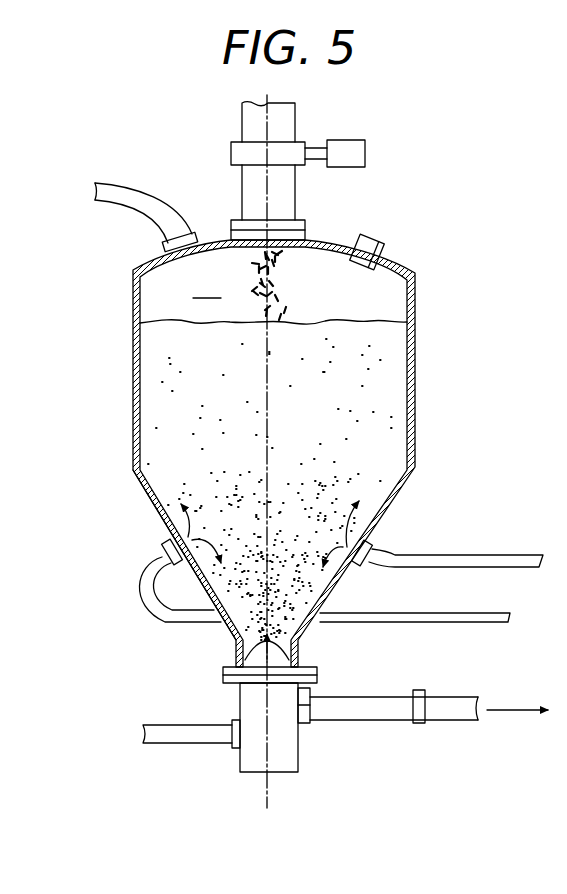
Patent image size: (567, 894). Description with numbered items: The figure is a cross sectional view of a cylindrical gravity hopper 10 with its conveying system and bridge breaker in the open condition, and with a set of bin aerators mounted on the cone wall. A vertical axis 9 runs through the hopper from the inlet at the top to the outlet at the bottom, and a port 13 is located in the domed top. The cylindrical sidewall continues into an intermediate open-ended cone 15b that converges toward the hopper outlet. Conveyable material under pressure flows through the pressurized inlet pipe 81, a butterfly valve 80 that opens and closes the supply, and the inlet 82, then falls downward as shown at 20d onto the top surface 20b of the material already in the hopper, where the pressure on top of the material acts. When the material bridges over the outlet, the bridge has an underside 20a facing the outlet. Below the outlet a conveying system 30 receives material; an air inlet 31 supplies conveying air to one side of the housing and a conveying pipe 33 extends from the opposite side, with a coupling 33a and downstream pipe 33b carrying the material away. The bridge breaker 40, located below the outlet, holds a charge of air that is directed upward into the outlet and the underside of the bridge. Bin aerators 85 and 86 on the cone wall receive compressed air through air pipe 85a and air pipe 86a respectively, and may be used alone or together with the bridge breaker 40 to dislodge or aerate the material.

The gravity hopper 10 is at (441, 244).
The vertical axis 9 is at (270, 397).
The port 13 is at (150, 213).
The cone 15b is at (146, 500).
The underside 20a is at (243, 650).
The top surface 20b is at (185, 316).
The downward flow of conveyable material 20d is at (283, 297).
The conveying system 30 is at (222, 700).
The air inlet 31 is at (178, 737).
The conveying pipe 33 is at (363, 710).
The pipe coupling 33a is at (418, 725).
The downstream pipe 33b is at (443, 712).
The bridge breaker 40 is at (263, 755).
The butterfly valve 80 is at (297, 155).
The pressurized inlet pipe 81 is at (297, 107).
The inlet 82 is at (252, 188).
The bin aerator 85 is at (375, 545).
The air pipe 85a is at (421, 555).
The bin aerator 86 is at (166, 546).
The air pipe 86a is at (437, 622).